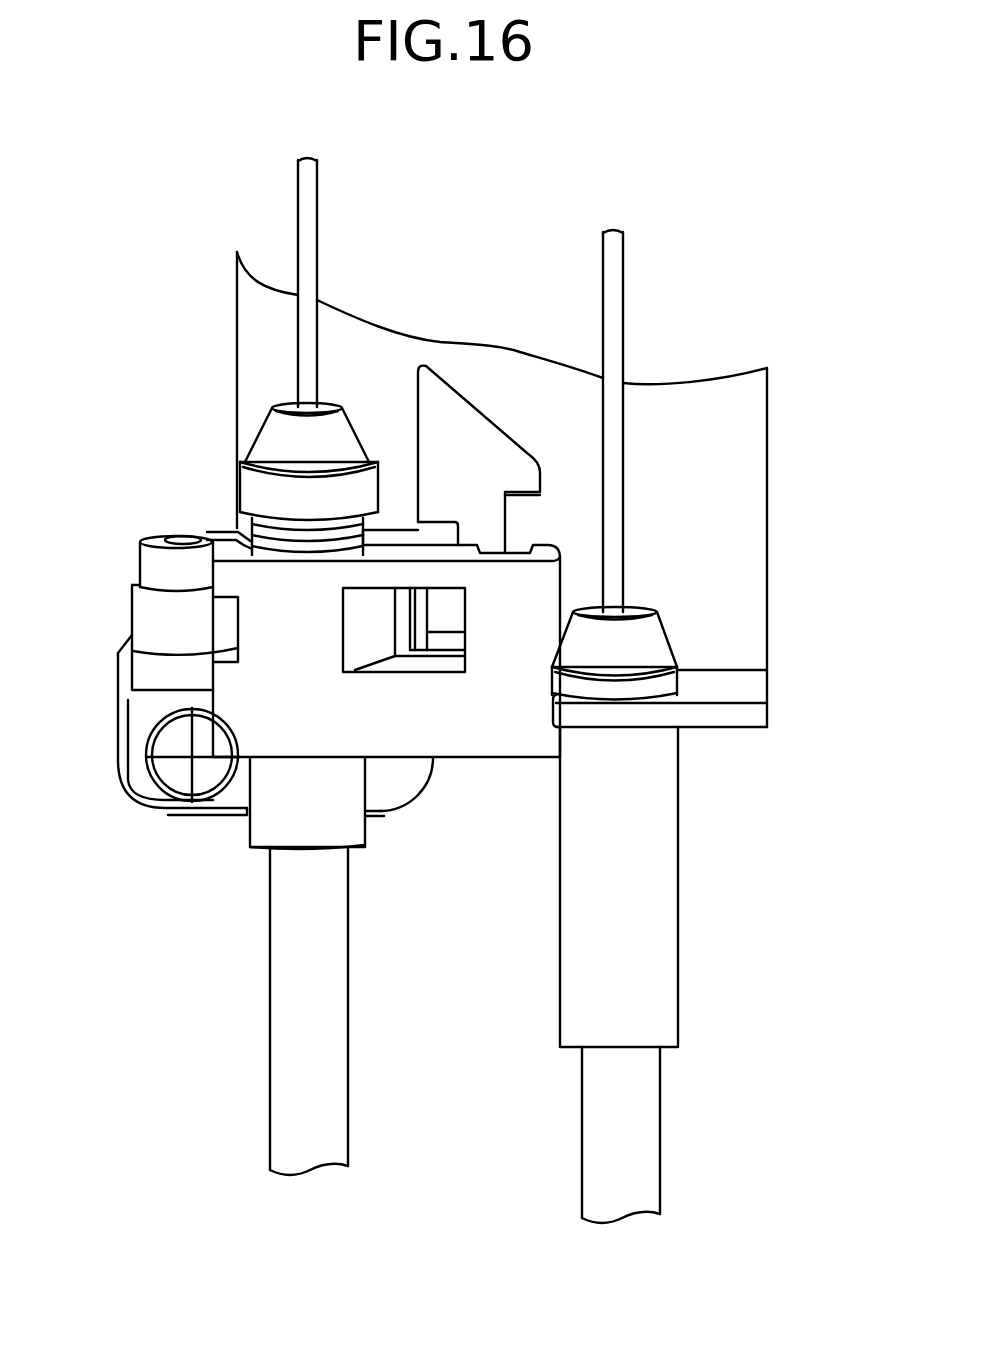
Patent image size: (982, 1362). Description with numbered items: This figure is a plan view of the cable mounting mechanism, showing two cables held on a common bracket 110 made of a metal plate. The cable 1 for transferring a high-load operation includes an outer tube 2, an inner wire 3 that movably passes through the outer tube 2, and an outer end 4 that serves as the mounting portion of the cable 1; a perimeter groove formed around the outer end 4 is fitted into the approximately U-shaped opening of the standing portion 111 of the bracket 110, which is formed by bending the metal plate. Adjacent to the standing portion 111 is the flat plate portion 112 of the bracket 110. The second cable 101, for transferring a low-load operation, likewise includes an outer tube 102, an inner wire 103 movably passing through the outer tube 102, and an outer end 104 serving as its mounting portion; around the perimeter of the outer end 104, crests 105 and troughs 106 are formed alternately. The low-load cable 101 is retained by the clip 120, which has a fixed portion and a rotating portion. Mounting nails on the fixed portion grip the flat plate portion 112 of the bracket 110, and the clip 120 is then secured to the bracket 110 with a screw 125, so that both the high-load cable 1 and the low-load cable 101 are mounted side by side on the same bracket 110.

The cable 1 is at (748, 985).
The outer tube 2 is at (660, 1160).
The inner wire 3 is at (623, 473).
The outer end 4 is at (678, 908).
The cable 101 is at (392, 831).
The outer tube 102 is at (348, 1097).
The inner wire 103 is at (317, 208).
The outer end 104 is at (375, 835).
The crests 105 is at (250, 540).
The troughs 106 is at (240, 520).
The bracket 110 is at (794, 539).
The standing portion 111 is at (727, 720).
The flat plate portion 112 is at (200, 818).
The clip 120 is at (503, 786).
The screw 125 is at (180, 777).